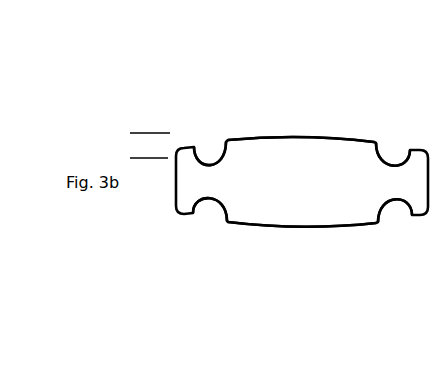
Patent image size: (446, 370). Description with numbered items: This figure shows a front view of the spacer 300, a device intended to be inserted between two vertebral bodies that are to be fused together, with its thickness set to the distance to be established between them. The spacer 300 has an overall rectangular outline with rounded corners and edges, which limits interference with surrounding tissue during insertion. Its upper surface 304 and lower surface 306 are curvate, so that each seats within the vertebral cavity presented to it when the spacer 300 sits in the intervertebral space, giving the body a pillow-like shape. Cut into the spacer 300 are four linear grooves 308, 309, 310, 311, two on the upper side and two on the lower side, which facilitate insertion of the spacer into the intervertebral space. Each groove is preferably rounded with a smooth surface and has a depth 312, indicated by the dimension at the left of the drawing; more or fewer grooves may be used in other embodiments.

The spacer 300 is at (265, 84).
The upper surface 304 is at (324, 129).
The lower surface 306 is at (321, 239).
The linear groove 308 is at (398, 136).
The linear groove 309 is at (398, 221).
The linear groove 310 is at (202, 142).
The linear groove 311 is at (204, 221).
The groove depth 312 is at (147, 103).